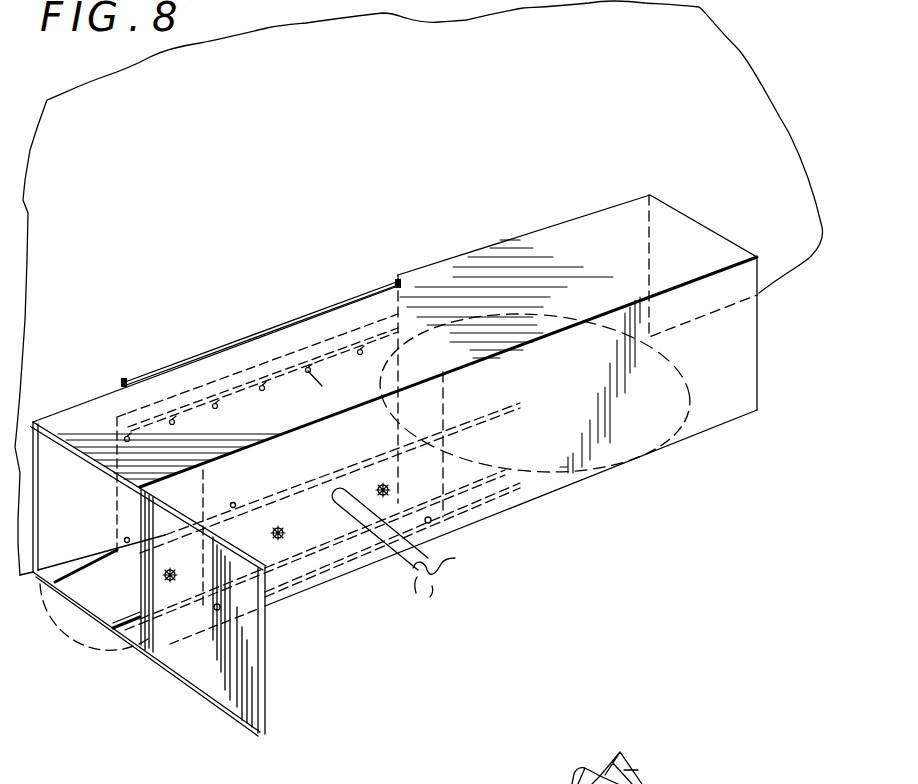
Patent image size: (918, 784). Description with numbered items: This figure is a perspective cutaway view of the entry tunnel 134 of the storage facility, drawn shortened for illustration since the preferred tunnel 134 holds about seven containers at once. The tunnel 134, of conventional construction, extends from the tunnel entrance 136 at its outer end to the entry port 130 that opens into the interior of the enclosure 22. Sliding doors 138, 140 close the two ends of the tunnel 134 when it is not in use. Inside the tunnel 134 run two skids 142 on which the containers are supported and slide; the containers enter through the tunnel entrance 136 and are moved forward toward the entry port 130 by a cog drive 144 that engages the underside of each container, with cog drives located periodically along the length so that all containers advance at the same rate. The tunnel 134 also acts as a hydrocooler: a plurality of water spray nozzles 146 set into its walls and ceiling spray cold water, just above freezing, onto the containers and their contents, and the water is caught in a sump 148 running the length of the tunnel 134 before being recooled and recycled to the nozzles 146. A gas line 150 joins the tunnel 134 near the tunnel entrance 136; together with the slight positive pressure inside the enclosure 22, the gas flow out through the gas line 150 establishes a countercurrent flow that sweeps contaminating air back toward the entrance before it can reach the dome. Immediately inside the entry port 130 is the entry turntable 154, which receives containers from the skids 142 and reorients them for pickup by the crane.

The enclosure 22 is at (720, 59).
The entry port 130 is at (684, 240).
The entry tunnel 134 is at (498, 493).
The tunnel entrance 136 is at (70, 490).
The sliding door 138 is at (212, 688).
The sliding door 140 is at (212, 351).
The skids 142 is at (428, 517).
The cog drive 144 is at (278, 527).
The water spray nozzles 146 is at (265, 392).
The sump 148 is at (98, 650).
The gas line 150 is at (420, 578).
The entry turntable 154 is at (675, 357).